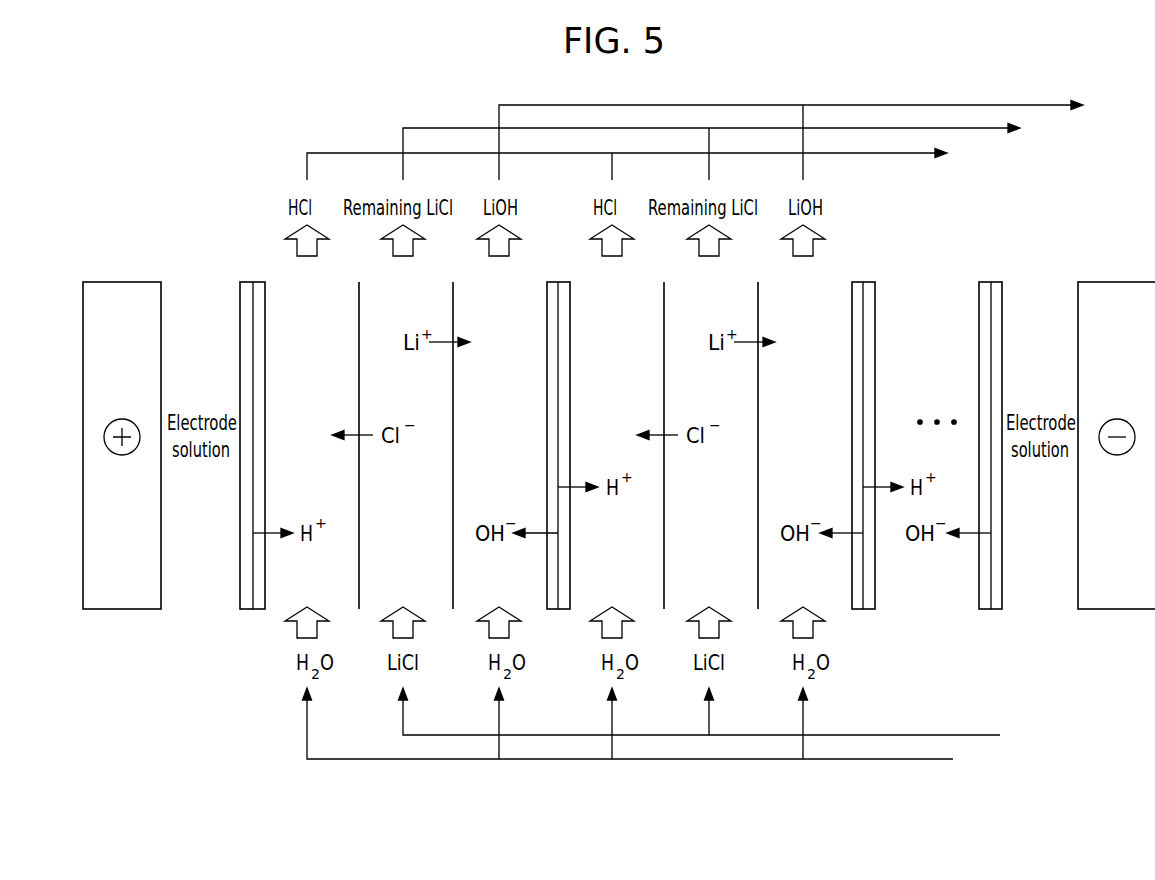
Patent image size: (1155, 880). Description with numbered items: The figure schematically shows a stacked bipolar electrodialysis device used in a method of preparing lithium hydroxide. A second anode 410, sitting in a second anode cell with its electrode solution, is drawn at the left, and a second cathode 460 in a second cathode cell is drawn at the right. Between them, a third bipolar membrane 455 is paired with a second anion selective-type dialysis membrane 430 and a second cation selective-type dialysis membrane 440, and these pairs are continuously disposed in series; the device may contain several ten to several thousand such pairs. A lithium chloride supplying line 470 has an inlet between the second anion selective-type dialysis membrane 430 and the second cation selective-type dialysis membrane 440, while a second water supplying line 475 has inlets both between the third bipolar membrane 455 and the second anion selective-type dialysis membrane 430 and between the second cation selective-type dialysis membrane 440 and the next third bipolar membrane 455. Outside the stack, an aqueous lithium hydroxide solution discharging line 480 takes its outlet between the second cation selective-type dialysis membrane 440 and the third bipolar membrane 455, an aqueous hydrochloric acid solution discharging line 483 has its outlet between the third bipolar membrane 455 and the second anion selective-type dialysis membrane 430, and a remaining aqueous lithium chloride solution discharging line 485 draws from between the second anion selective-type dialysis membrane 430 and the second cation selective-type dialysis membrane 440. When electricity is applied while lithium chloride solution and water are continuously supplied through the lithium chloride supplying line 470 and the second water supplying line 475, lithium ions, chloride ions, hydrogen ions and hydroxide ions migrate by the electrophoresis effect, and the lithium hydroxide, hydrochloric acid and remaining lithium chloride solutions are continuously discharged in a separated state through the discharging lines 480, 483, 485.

The second anode 410 is at (122, 428).
The second cathode 460 is at (1116, 428).
The third bipolar membrane 455 is at (621, 428).
The second anion selective-type dialysis membrane 430 is at (511, 428).
The second cation selective-type dialysis membrane 440 is at (605, 428).
The lithium chloride supplying line 470 is at (717, 719).
The second water supplying line 475 is at (646, 731).
The aqueous lithium hydroxide solution discharging line 480 is at (811, 136).
The remaining aqueous lithium chloride solution discharging line 485 is at (731, 147).
The aqueous hydrochloric acid solution discharging line 483 is at (646, 160).